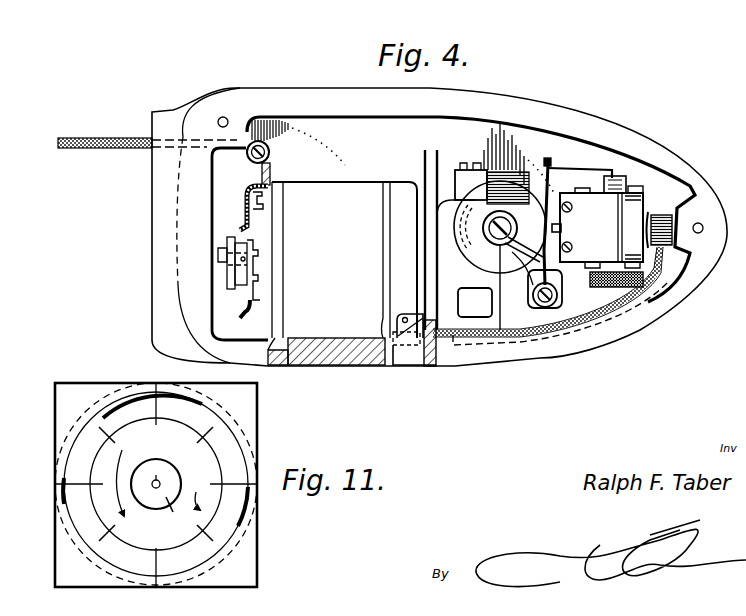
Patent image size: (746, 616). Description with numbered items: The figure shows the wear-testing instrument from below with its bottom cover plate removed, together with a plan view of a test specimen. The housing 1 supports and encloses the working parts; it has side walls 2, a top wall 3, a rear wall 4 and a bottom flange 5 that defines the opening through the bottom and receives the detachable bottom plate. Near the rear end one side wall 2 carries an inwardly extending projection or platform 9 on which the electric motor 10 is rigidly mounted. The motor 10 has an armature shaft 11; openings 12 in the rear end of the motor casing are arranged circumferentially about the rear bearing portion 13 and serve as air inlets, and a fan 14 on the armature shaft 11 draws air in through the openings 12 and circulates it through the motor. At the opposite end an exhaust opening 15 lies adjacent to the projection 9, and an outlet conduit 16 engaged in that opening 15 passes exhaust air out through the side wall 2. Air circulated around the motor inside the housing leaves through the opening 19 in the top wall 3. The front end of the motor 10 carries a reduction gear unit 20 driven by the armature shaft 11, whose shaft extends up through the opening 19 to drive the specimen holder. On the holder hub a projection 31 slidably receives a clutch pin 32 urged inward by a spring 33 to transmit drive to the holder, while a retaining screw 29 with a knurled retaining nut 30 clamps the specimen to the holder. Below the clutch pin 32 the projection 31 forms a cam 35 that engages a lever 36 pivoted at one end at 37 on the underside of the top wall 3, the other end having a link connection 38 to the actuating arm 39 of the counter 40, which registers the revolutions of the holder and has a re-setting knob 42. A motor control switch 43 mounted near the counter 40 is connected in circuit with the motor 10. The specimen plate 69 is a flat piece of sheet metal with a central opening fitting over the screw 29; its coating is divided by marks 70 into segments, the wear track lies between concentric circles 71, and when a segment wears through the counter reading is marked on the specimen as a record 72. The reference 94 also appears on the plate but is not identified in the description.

In FIG. 4, the housing 1 is at (292, 88).
In FIG. 4, the side walls 2 is at (478, 352).
In FIG. 4, the top wall 3 is at (351, 125).
In FIG. 4, the rear wall 4 is at (152, 318).
In FIG. 4, the bottom flange 5 is at (509, 334).
In FIG. 4, the projection or platform 9 is at (342, 352).
In FIG. 4, the electric motor 10 is at (321, 323).
In FIG. 4, the armature shaft 11 is at (224, 250).
In FIG. 4, the openings 12 is at (245, 202).
In FIG. 4, the rear bearing portion 13 is at (238, 280).
In FIG. 4, the fan 14 is at (262, 202).
In FIG. 4, the exhaust opening 15 is at (405, 317).
In FIG. 4, the outlet conduit 16 is at (432, 347).
In FIG. 4, the opening 19 is at (517, 170).
In FIG. 4, the reduction gear unit 20 is at (483, 281).
In FIG. 11, the retaining screw 29 is at (156, 484).
In FIG. 11, the knurled retaining nut 30 is at (169, 515).
In FIG. 4, the projection 31 is at (532, 212).
In FIG. 4, the clutch pin 32 is at (562, 228).
In FIG. 4, the spring 33 is at (530, 250).
In FIG. 4, the cam 35 is at (532, 215).
In FIG. 4, the lever 36 is at (556, 172).
In FIG. 4, the pivot 37 is at (558, 292).
In FIG. 4, the link connection 38 is at (612, 178).
In FIG. 4, the actuating arm 39 is at (618, 176).
In FIG. 4, the counting device 40 is at (640, 210).
In FIG. 4, the re-setting knob 42 is at (598, 288).
In FIG. 4, the motor control switch 43 is at (690, 215).
In FIG. 11, the specimen plate 69 is at (257, 413).
In FIG. 11, the marks 70 is at (160, 397).
In FIG. 11, the concentric circles 71 is at (130, 418).
In FIG. 11, the record 72 is at (212, 484).
In FIG. 11, the index line 94 is at (153, 397).